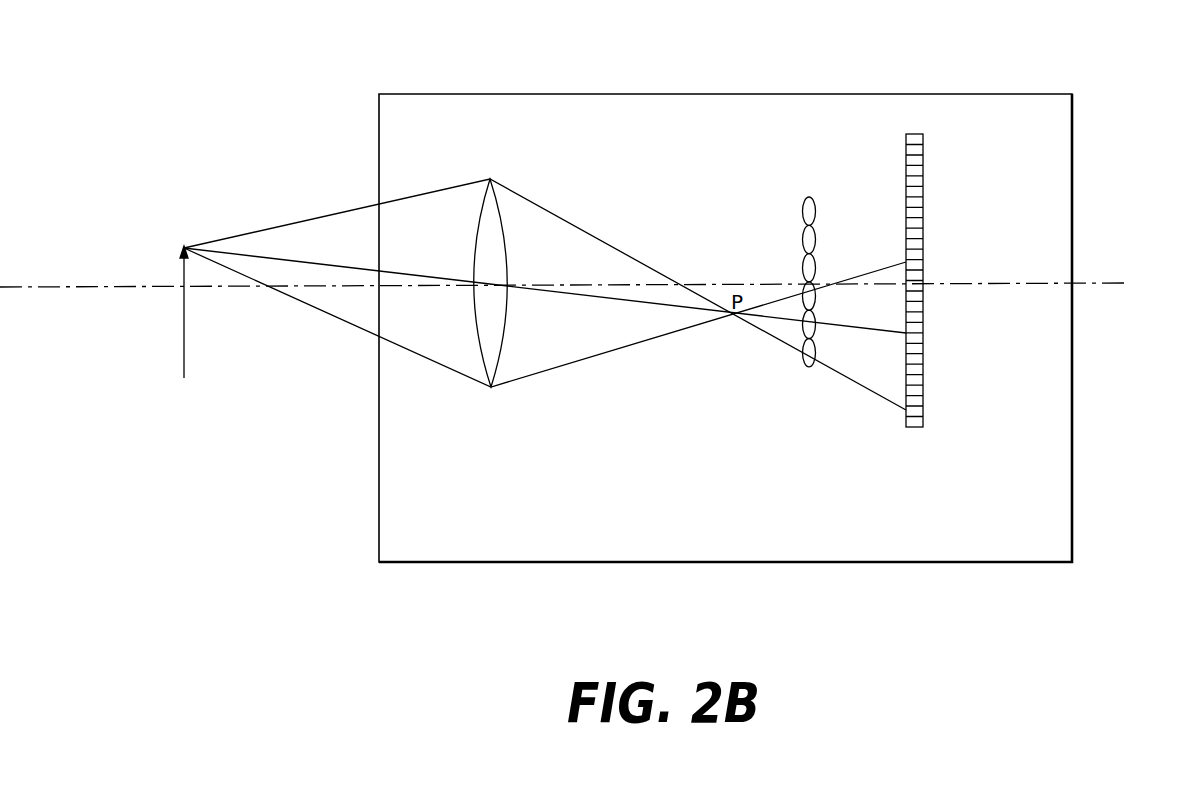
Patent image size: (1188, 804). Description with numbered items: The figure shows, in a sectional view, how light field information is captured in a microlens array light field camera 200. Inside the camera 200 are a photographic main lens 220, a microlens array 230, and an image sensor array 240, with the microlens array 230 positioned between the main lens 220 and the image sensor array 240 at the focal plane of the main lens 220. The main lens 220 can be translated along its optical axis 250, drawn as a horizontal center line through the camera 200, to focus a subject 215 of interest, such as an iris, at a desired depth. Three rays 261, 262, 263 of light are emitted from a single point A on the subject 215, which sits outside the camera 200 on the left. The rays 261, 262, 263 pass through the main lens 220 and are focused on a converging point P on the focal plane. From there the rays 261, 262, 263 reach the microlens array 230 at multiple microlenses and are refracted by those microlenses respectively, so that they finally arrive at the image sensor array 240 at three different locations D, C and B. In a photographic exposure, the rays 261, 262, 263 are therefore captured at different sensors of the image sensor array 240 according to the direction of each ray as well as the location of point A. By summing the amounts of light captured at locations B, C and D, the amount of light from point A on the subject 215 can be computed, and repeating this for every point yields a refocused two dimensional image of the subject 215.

The microlens array light field camera 200 is at (1007, 88).
The subject 215 is at (182, 308).
The main lens 220 is at (500, 197).
The microlens array 230 is at (816, 233).
The image sensor array 240 is at (925, 217).
The optical axis 250 is at (1115, 277).
The ray 261 is at (260, 228).
The ray 262 is at (300, 262).
The ray 263 is at (337, 321).